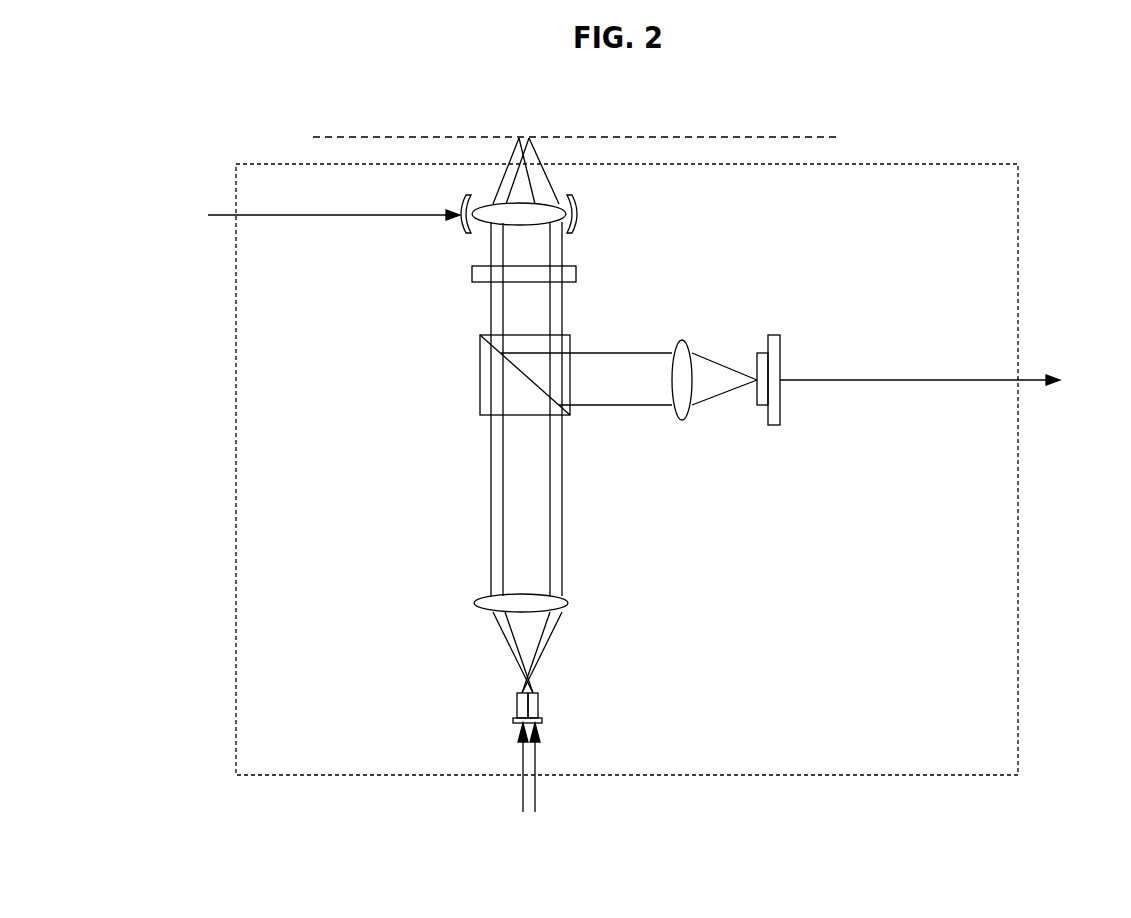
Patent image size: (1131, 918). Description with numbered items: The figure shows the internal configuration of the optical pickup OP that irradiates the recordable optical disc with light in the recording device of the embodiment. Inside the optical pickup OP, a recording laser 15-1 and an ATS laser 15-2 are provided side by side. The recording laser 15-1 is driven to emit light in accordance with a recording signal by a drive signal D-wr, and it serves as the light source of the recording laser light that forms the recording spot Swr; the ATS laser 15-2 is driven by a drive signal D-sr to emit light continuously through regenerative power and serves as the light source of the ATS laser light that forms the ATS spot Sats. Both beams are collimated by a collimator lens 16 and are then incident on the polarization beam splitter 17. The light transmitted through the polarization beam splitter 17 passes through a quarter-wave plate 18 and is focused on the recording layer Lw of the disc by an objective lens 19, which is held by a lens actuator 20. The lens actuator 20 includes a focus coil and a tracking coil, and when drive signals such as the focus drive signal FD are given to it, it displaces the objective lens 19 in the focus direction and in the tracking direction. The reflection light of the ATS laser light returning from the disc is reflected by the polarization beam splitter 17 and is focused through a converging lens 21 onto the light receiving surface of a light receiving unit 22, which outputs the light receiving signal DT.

The recording laser 15-1 is at (517, 708).
The ATS laser 15-2 is at (538, 708).
The collimator lens 16 is at (475, 603).
The polarization beam splitter 17 is at (480, 387).
The quarter-wave plate 18 is at (576, 273).
The objective lens 19 is at (478, 232).
The lens actuator 20 is at (577, 197).
The converging lens 21 is at (686, 419).
The light receiving unit 22 is at (774, 425).
The optical pickup OP is at (1018, 735).
The recording layer Lw is at (840, 137).
The recording spot Swr is at (519, 138).
The ATS spot Sats is at (529, 138).
The light receiving signal DT is at (937, 380).
The focus drive signal FD is at (292, 215).
The drive signal D-wr is at (523, 784).
The drive signal D-sr is at (535, 784).